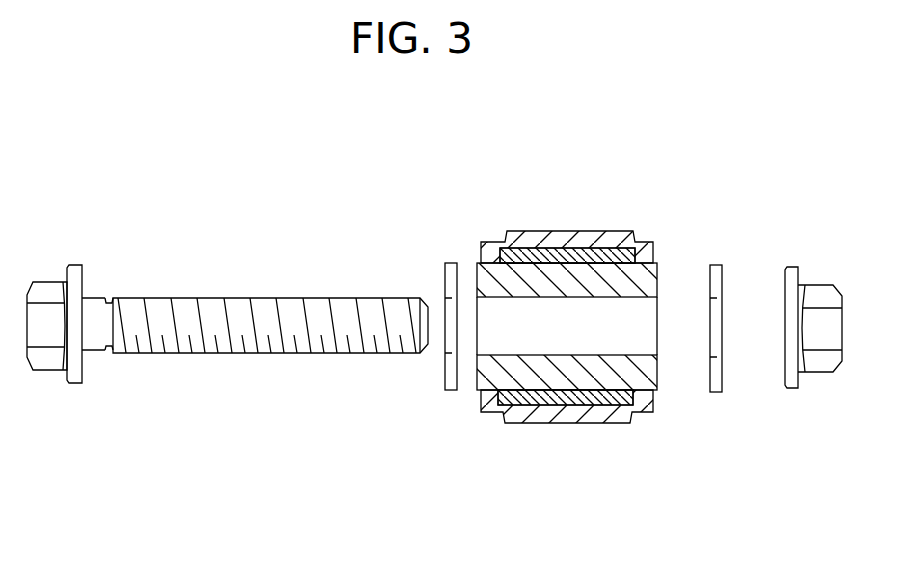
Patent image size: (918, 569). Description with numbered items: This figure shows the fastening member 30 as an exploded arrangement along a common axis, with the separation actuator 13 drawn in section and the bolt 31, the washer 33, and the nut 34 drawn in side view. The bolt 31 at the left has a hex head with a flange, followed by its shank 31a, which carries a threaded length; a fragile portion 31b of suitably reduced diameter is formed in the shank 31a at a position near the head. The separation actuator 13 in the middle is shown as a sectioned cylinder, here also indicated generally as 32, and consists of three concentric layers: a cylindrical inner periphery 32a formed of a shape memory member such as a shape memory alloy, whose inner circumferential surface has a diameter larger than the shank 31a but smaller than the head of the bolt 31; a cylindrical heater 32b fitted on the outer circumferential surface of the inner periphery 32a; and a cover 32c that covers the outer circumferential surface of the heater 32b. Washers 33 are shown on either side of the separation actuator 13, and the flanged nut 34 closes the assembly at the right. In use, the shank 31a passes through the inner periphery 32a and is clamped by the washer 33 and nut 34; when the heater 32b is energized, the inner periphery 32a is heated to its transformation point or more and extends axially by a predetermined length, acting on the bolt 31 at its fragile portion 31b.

The fastening member 30 is at (687, 167).
The separation actuator 13 is at (480, 241).
The bolt 31 is at (85, 262).
The shank 31a is at (328, 298).
The fragile portion 31b is at (108, 298).
The bush 32 is at (654, 405).
The inner periphery 32a is at (486, 275).
The heater 32b is at (565, 255).
The cover 32c is at (614, 237).
The washer 33 is at (450, 392).
The nut 34 is at (793, 266).